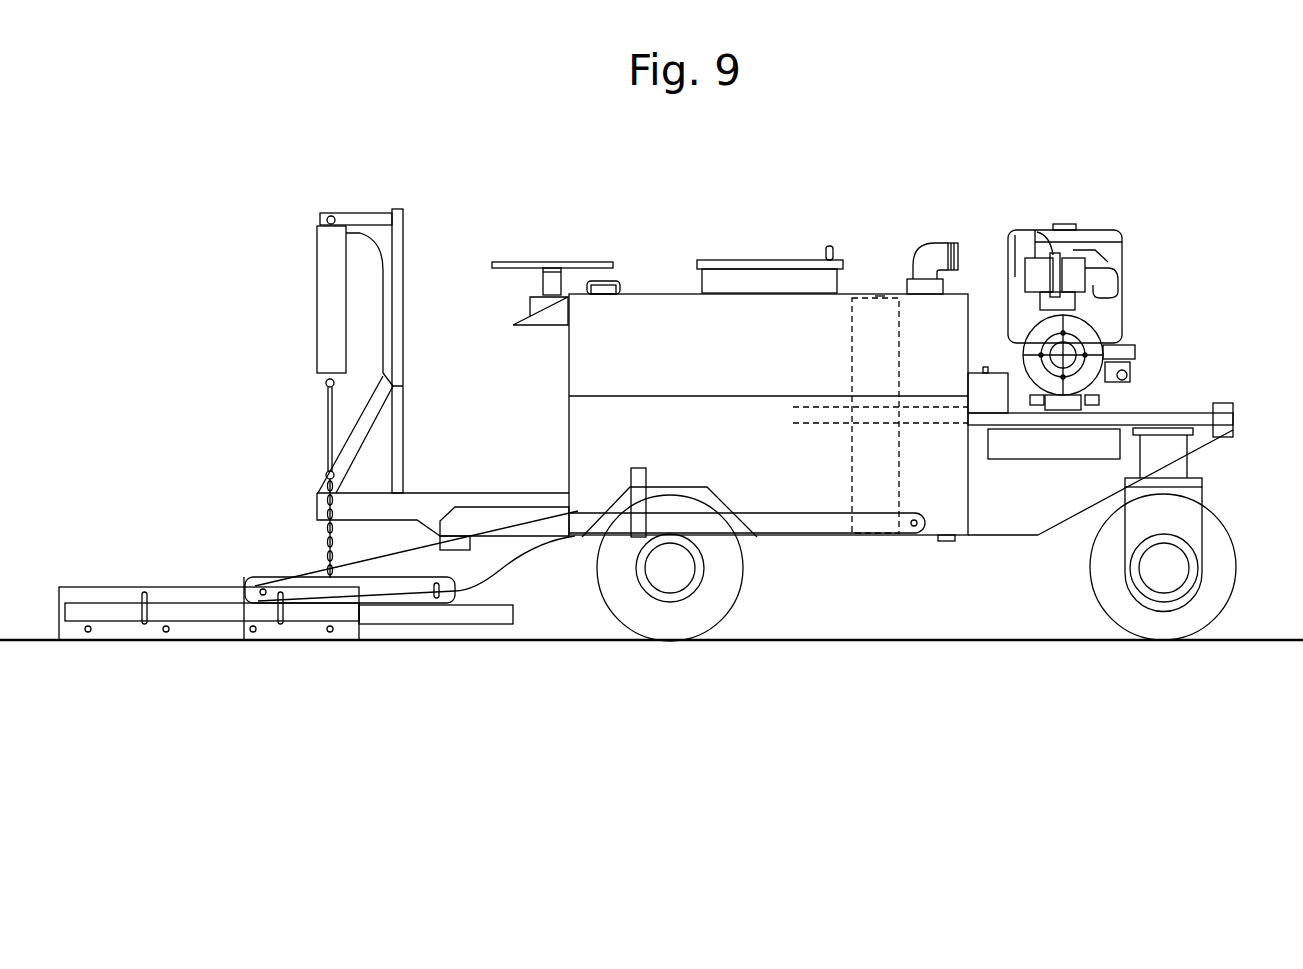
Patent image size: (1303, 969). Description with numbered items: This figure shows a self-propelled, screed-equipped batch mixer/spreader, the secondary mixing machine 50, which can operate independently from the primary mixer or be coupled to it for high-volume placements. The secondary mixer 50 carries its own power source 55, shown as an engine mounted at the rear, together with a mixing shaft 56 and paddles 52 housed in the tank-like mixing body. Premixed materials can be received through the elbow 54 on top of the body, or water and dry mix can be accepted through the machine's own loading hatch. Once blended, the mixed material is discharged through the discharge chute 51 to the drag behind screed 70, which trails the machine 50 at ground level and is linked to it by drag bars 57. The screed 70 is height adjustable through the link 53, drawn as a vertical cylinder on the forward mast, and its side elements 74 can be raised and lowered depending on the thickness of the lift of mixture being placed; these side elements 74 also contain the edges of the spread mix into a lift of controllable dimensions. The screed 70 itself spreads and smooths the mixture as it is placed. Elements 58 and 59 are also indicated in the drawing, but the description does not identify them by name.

The secondary mixing machine 50 is at (778, 200).
The discharge chute 51 is at (1200, 465).
The paddles 52 is at (852, 347).
The link 53 is at (318, 295).
The elbow 54 is at (916, 253).
The power source 55 is at (1122, 275).
The mixing shaft 56 is at (985, 390).
The drag bars 57 is at (492, 560).
The frame bracket 58 is at (485, 508).
The tank compartment 59 is at (882, 294).
The drag behind screed 70 is at (180, 585).
The side elements 74 is at (185, 645).